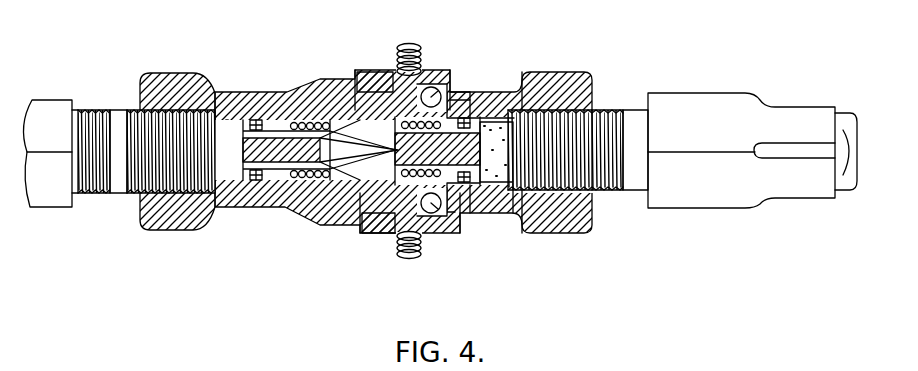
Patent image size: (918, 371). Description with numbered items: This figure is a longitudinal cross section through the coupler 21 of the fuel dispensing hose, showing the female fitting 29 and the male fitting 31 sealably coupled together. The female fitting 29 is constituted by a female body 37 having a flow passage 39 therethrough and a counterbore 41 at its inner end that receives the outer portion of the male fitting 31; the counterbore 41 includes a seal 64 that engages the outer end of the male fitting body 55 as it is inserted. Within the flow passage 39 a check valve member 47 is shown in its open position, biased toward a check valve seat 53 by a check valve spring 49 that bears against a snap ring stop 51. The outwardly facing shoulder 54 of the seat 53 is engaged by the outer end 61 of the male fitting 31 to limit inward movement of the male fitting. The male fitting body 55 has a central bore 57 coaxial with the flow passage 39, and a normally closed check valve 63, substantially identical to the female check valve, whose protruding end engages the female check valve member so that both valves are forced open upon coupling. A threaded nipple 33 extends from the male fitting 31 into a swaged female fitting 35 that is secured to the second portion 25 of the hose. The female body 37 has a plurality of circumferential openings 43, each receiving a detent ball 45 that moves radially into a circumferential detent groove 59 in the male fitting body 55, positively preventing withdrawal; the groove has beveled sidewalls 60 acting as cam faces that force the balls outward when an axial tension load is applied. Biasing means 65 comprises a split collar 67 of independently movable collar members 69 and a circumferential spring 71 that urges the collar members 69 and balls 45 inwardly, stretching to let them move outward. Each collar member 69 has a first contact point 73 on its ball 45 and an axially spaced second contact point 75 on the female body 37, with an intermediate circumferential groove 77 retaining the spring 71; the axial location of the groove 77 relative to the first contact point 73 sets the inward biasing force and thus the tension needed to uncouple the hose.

The coupler 21 is at (546, 76).
The second portion of fuel dispensing hose 25 is at (790, 106).
The female coupling fitting 29 is at (287, 88).
The male fitting 31 is at (504, 122).
The threaded nipple 33 is at (630, 193).
The swaged female fitting 35 is at (737, 210).
The female body 37 is at (310, 88).
The flow passage 39 is at (226, 120).
The counterbore 41 is at (456, 102).
The openings 43 is at (452, 222).
The detent ball 45 is at (446, 114).
The check valve member 47 is at (320, 165).
The check valve spring 49 is at (292, 178).
The snap ring stop 51 is at (250, 182).
The check valve seat 53 is at (360, 176).
The shoulder 54 is at (338, 188).
The male fitting body 55 is at (523, 215).
The central bore 57 is at (500, 125).
The circumferential detent groove 59 is at (542, 98).
The beveled sidewalls 60 is at (393, 149).
The outer end 61 is at (353, 94).
The check valve 63 is at (498, 216).
The seal 64 is at (381, 72).
The biasing means 65 is at (434, 246).
The split collar 67 is at (390, 244).
The collar members 69 is at (401, 48).
The circumferential spring 71 is at (419, 64).
The first contact point 73 is at (447, 217).
The second contact point 75 is at (376, 237).
The circumferential groove 77 is at (472, 114).